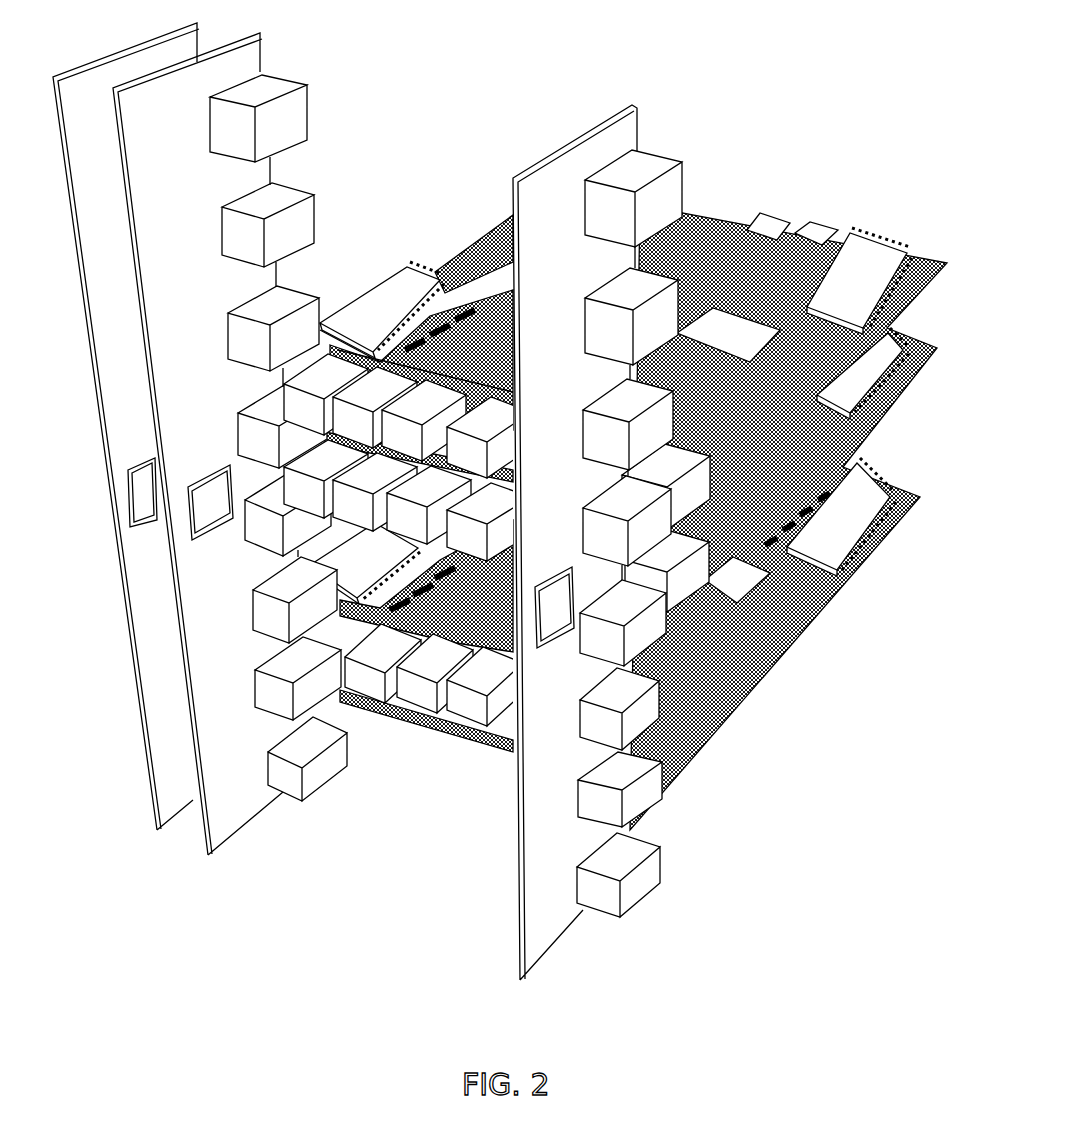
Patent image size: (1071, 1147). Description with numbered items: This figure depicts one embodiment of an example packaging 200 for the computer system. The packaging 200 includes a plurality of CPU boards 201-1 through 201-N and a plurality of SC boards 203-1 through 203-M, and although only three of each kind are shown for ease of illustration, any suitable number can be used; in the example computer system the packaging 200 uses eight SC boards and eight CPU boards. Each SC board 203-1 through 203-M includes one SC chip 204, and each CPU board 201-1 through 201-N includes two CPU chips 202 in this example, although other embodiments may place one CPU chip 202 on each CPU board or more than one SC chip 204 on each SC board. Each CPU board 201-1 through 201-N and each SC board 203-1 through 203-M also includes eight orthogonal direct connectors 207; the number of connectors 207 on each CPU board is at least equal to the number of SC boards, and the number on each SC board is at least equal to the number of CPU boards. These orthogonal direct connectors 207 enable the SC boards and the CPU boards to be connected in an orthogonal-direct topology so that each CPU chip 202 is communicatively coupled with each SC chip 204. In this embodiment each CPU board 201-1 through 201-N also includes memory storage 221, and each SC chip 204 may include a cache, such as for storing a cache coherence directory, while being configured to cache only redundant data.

The packaging 200 is at (788, 58).
The CPU board 201-1 is at (443, 260).
The CPU board 201-N is at (747, 697).
The CPU chip 202 is at (487, 233).
The SC board 203-1 is at (173, 807).
The SC board 203-M is at (552, 927).
The SC chip 204 is at (203, 508).
The orthogonal direct connector 207 is at (278, 80).
The memory storage 221 is at (367, 307).